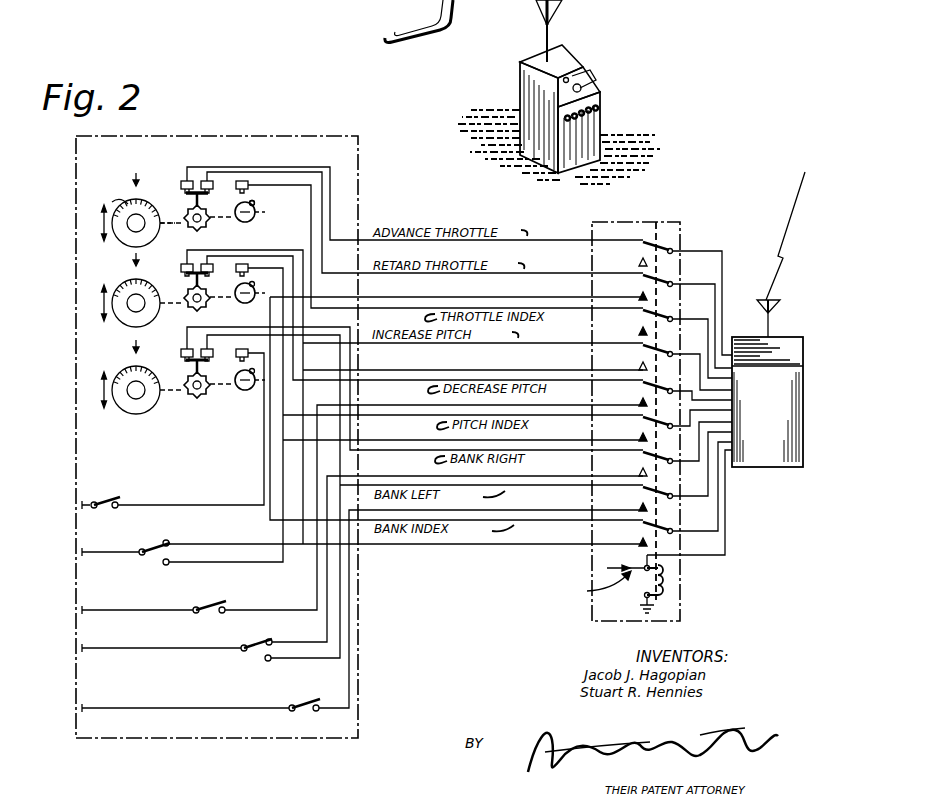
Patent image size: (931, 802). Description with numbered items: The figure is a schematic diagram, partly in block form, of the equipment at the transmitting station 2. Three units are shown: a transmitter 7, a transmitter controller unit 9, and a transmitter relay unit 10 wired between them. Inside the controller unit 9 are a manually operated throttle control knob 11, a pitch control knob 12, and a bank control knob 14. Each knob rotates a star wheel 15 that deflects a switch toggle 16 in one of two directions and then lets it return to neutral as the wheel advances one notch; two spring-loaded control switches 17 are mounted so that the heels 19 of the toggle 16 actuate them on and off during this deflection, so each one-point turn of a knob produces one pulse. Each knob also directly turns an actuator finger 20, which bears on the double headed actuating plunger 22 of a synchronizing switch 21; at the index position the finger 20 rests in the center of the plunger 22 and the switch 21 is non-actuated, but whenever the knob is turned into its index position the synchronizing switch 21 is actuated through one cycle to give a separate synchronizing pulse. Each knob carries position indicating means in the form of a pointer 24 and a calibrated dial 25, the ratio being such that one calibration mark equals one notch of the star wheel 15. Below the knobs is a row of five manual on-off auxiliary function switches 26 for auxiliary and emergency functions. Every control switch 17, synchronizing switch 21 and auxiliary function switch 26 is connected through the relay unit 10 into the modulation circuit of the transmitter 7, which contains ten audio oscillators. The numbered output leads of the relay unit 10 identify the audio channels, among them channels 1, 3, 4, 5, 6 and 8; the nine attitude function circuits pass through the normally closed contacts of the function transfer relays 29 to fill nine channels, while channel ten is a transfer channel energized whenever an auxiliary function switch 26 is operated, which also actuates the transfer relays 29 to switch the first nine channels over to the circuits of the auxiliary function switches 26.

The transmitting station 2 is at (572, 50).
The transmitter 7 is at (729, 332).
The relay 8 is at (687, 319).
The transmitter controller unit 9 is at (336, 740).
The audio channel 1 is at (687, 365).
The audio channel 3 is at (687, 419).
The audio channel 4 is at (687, 443).
The audio channel 5 is at (687, 465).
The audio channel 6 is at (687, 488).
The transmitter relay unit 10 is at (735, 624).
The function transfer relay 29 is at (668, 578).
The throttle control knob 11 is at (128, 238).
The pitch control knob 12 is at (128, 318).
The bank control knob 14 is at (128, 405).
The star wheel 15 is at (205, 228).
The switch toggle 16 is at (190, 222).
The control switch 17 is at (184, 182).
The heel 19 is at (188, 194).
The actuator finger 20 is at (256, 208).
The synchronizing switch 21 is at (245, 180).
The double headed actuating plunger 22 is at (256, 197).
The pointer 24 is at (130, 194).
The calibrated dial 25 is at (120, 202).
The auxiliary function switch 26 is at (118, 508).